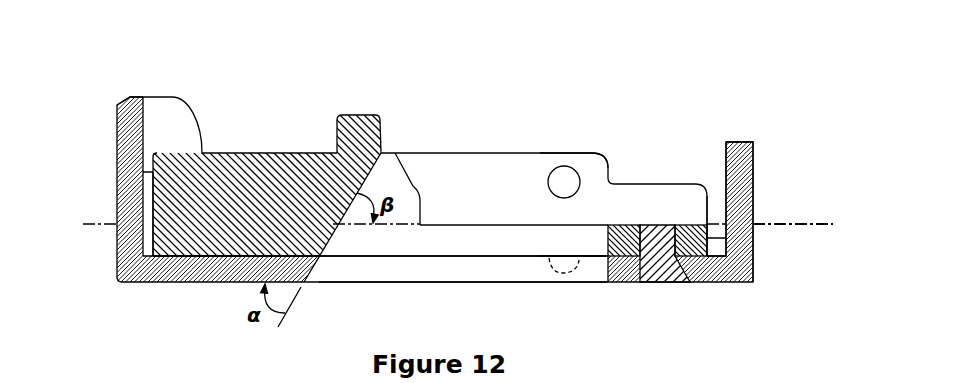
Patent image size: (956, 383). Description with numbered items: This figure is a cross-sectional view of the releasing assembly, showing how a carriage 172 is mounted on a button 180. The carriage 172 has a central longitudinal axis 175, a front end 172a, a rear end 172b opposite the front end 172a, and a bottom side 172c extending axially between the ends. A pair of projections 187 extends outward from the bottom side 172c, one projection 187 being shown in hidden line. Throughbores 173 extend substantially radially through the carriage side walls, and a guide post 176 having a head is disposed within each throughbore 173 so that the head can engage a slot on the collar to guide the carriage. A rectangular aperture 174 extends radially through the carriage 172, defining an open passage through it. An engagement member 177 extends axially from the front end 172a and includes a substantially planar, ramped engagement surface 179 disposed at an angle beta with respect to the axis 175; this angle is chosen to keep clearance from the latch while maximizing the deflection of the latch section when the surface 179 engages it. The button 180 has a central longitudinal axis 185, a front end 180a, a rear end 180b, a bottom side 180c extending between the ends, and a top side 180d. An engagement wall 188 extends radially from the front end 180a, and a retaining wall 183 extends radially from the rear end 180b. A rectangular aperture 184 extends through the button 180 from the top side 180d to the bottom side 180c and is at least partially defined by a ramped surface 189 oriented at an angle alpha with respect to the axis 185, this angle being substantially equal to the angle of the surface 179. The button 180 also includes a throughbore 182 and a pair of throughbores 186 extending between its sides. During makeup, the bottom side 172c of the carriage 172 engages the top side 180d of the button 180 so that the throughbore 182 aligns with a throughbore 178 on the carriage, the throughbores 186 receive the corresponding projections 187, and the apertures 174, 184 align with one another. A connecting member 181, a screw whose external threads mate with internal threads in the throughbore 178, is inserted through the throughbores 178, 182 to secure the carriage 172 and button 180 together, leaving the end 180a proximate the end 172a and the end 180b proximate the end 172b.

The button 180 is at (86, 58).
The front end 180a is at (110, 200).
The rear end 180b is at (763, 247).
The bottom side 180c is at (155, 290).
The top side 180d is at (289, 247).
The engagement wall 188 is at (118, 127).
The retaining wall 183 is at (756, 152).
The carriage 172 is at (268, 95).
The front end 172a is at (146, 196).
The rear end 172b is at (705, 209).
The bottom side 172c is at (235, 263).
The throughbore 173 is at (564, 155).
The rectangular aperture 174 is at (473, 218).
The central longitudinal axis 175 is at (802, 224).
The central longitudinal axis 185 is at (802, 224).
The guide post 176 is at (572, 186).
The engagement member 177 is at (386, 103).
The throughbore 178 is at (626, 228).
The ramped engagement surface 179 is at (362, 187).
The connecting member 181 is at (662, 283).
The throughbore 182 is at (624, 272).
The rectangular aperture 184 is at (507, 279).
The throughbore 186 is at (548, 270).
The projection 187 is at (548, 252).
The ramped surface 189 is at (316, 270).